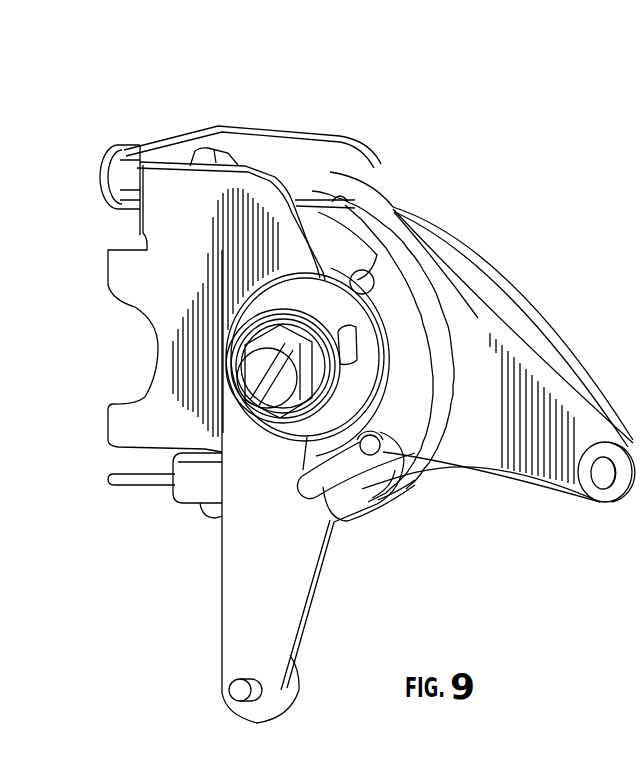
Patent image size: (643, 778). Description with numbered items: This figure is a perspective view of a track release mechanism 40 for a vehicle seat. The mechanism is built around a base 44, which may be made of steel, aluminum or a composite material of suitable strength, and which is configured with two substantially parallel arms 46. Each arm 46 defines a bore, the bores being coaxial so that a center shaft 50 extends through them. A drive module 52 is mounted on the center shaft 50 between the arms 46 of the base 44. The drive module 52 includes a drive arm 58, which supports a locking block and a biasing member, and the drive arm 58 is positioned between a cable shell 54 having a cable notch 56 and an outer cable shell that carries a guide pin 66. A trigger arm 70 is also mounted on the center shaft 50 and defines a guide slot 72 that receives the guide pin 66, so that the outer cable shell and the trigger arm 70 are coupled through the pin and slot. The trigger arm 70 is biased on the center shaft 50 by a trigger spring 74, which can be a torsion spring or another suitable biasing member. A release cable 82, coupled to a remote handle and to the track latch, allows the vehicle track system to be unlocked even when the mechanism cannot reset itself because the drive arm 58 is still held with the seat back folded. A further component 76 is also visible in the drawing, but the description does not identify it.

The track release mechanism 40 is at (450, 175).
The base 44 is at (270, 111).
The arms 46 is at (318, 127).
The center shaft 50 is at (120, 420).
The drive module 52 is at (508, 293).
The cable shell 54 is at (397, 177).
The cable notch 56 is at (410, 207).
The drive arm 58 is at (592, 398).
The guide pin 66 is at (380, 448).
The trigger arm 70 is at (297, 640).
The guide slot 72 is at (325, 490).
The trigger spring 74 is at (295, 440).
The pivot plate 76 is at (265, 433).
The release cable 82 is at (133, 480).